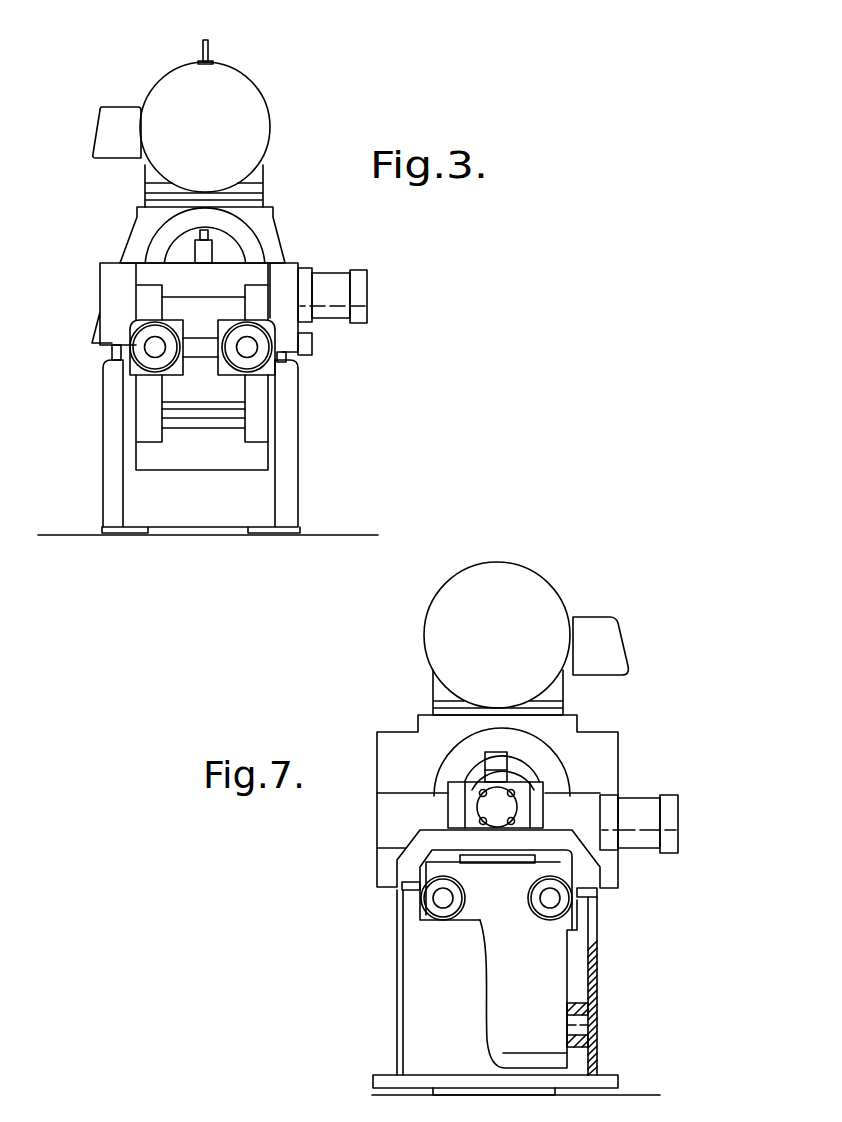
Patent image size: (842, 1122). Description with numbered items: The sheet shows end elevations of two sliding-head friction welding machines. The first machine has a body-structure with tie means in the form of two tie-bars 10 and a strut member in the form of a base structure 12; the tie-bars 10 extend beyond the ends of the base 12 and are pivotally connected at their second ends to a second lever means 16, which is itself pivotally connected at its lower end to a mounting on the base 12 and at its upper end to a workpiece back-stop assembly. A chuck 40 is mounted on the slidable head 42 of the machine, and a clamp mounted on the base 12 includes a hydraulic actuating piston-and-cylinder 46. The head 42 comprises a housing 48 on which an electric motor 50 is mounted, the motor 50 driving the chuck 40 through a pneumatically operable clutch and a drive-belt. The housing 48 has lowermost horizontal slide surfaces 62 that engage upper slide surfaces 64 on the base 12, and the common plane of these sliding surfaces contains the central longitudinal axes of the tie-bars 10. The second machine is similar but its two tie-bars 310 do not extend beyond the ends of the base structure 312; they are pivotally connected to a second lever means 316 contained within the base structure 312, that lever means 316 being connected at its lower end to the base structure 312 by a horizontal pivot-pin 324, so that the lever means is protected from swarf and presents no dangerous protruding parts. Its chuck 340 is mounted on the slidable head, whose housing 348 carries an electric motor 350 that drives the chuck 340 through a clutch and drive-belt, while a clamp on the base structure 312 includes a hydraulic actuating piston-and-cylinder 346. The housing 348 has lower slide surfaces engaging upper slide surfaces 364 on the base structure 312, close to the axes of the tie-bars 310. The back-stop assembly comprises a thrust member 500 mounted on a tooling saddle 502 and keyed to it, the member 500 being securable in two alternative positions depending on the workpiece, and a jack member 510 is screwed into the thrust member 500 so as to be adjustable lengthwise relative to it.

In FIG. 3, the tie-bars 10 is at (153, 352).
In FIG. 3, the base structure 12 is at (108, 478).
In FIG. 3, the second lever means 16 is at (270, 435).
In FIG. 3, the chuck 40 is at (225, 254).
In FIG. 3, the slidable head 42 is at (276, 223).
In FIG. 3, the hydraulic actuating piston-and-cylinder 46 is at (338, 284).
In FIG. 3, the housing 48 is at (140, 238).
In FIG. 3, the electric motor 50 is at (250, 115).
In FIG. 3, the lowermost horizontal slide surfaces 62 is at (287, 343).
In FIG. 3, the upper slide surfaces 64 is at (121, 356).
In FIG. 7, the tie-bars 310 is at (440, 898).
In FIG. 7, the base structure 312 is at (595, 995).
In FIG. 7, the second lever means 316 is at (505, 987).
In FIG. 7, the horizontal pivot-pin 324 is at (587, 1023).
In FIG. 7, the chuck 340 is at (520, 768).
In FIG. 7, the hydraulic actuating piston-and-cylinder 346 is at (640, 808).
In FIG. 7, the housing 348 is at (608, 643).
In FIG. 7, the electric motor 350 is at (550, 600).
In FIG. 7, the upper slide surfaces 364 is at (585, 912).
In FIG. 7, the thrust member 500 is at (455, 797).
In FIG. 7, the tooling saddle 502 is at (589, 875).
In FIG. 7, the jack member 510 is at (488, 805).